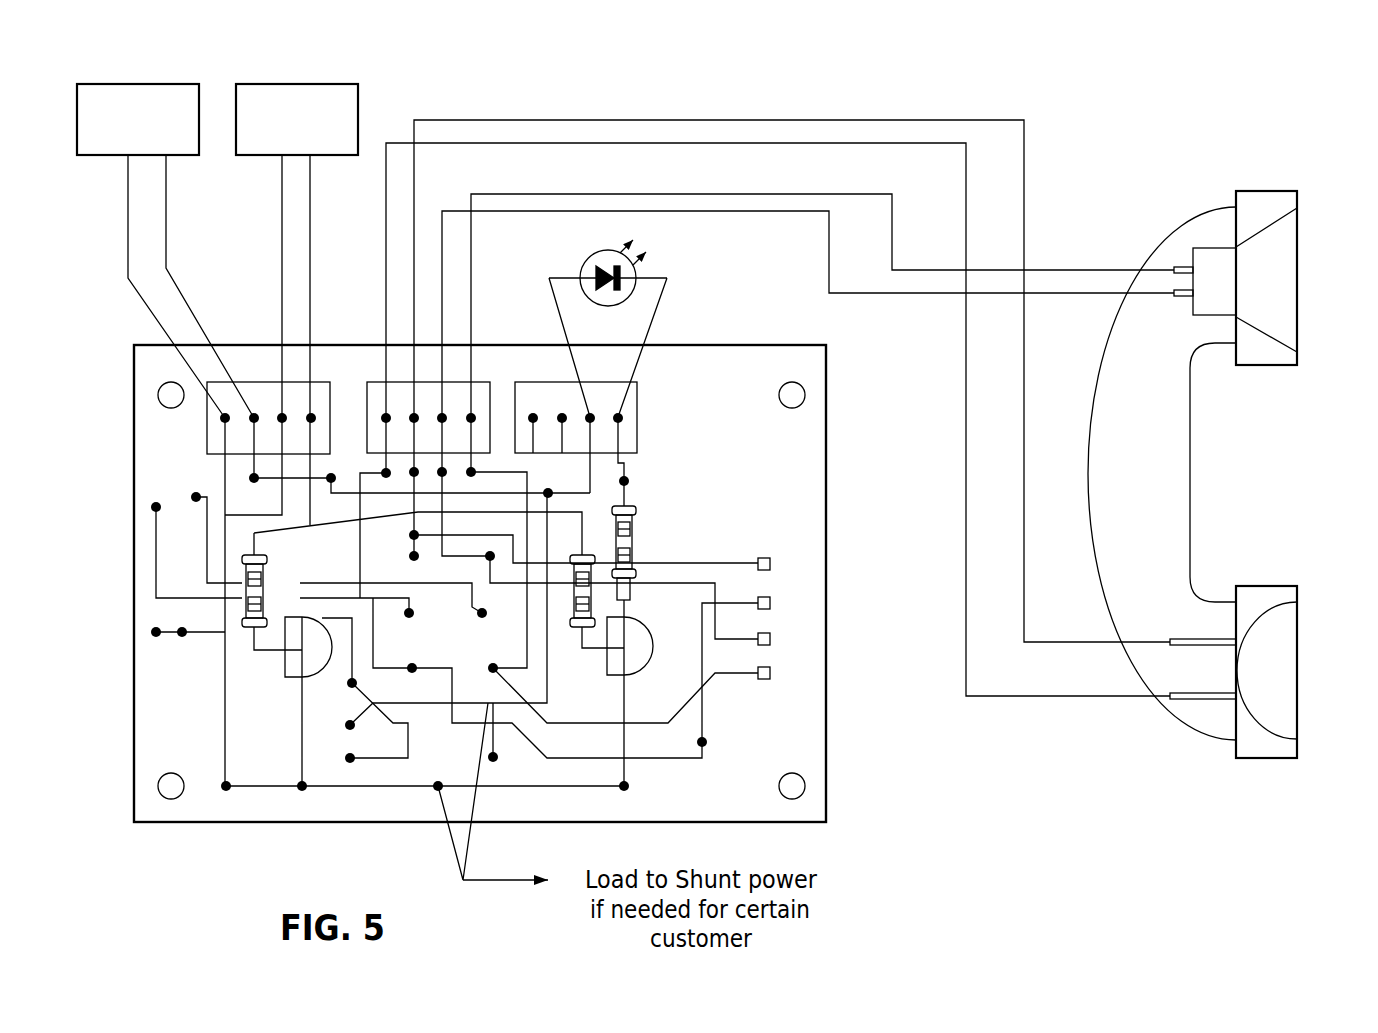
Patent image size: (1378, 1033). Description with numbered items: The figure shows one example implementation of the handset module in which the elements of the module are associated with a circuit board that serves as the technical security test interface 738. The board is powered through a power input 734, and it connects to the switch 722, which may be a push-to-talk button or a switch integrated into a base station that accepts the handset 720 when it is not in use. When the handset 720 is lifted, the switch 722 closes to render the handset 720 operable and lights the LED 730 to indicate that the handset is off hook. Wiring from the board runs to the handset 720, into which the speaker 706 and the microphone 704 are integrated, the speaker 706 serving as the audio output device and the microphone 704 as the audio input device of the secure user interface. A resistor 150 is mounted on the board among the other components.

The power input 734 is at (150, 80).
The switch 722 is at (288, 80).
The LED 730 is at (676, 263).
The technical security test interface 738 is at (518, 583).
The resistor 150 is at (645, 553).
The handset 720 is at (1180, 204).
The speaker 706 is at (1305, 256).
The microphone 704 is at (1308, 675).